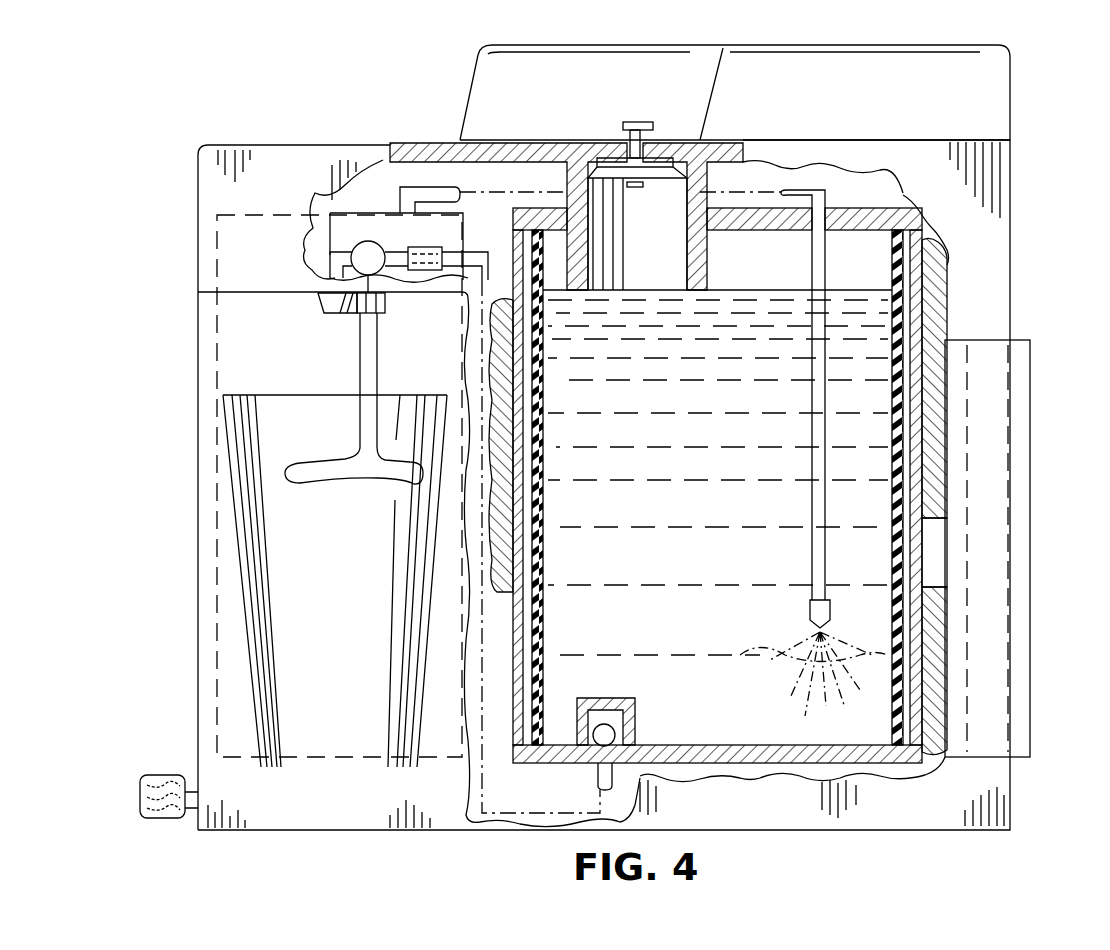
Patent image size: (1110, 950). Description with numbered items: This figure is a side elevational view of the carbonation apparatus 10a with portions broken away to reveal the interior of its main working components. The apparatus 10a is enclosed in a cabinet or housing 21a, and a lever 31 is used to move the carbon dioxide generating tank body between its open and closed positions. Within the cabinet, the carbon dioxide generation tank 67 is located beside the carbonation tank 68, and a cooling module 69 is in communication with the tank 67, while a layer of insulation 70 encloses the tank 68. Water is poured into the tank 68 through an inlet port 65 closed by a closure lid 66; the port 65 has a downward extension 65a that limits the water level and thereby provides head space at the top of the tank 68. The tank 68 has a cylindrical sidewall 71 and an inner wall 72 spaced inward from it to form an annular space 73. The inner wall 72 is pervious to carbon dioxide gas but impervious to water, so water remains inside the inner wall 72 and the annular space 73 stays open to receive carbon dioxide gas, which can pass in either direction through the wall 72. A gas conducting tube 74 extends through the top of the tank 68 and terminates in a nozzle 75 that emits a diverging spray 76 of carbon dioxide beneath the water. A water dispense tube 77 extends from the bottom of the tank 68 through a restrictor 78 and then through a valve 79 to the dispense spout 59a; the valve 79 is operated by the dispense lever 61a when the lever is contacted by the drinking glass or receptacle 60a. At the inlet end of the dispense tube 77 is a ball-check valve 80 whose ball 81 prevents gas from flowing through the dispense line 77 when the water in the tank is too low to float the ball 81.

The carbonation apparatus 10a is at (1020, 86).
The cabinet or housing 21a is at (480, 100).
The lever 31 is at (158, 775).
The dispense spout 59a is at (340, 318).
The drinking glass or receptacle 60a is at (243, 591).
The dispense lever 61a is at (288, 471).
The inlet port 65 is at (617, 147).
The downward extension 65a is at (690, 262).
The closure lid 66 is at (650, 173).
The carbon dioxide generation tank 67 is at (206, 272).
The carbonation tank 68 is at (905, 192).
The cooling module 69 is at (1025, 415).
The layer of insulation 70 is at (940, 262).
The cylindrical sidewall 71 is at (925, 296).
The inner wall 72 is at (905, 344).
The annular space 73 is at (905, 327).
The gas conducting tube 74 is at (433, 187).
The nozzle 75 is at (810, 615).
The diverging spray 76 is at (766, 656).
The water dispense tube 77 is at (537, 815).
The restrictor 78 is at (432, 247).
The valve 79 is at (328, 228).
The ball-check valve 80 is at (600, 700).
The ball 81 is at (618, 731).